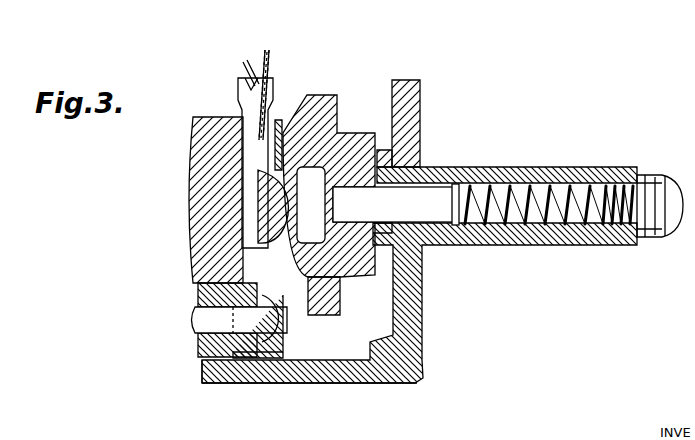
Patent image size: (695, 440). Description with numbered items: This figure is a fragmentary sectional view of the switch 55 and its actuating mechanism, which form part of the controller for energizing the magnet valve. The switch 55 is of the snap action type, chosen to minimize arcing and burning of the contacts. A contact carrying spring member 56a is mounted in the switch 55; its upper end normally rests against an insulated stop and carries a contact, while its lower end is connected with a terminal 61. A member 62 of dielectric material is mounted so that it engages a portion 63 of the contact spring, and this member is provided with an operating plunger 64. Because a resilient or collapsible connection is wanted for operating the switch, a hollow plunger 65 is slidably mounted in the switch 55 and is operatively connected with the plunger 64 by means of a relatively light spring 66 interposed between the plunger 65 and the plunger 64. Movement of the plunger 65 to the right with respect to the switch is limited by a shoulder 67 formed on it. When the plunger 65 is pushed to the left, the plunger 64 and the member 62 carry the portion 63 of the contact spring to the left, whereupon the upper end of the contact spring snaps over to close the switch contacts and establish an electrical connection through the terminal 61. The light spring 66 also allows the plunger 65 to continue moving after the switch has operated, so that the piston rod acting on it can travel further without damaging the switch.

The switch 55 is at (367, 384).
The contact carrying spring member 56a is at (264, 56).
The terminal 61 is at (206, 322).
The member of dielectric material 62 is at (326, 315).
The portion of the contact spring 63 is at (258, 228).
The operating plunger 64 is at (398, 213).
The hollow plunger 65 is at (596, 172).
The spring 66 is at (622, 226).
The shoulder 67 is at (340, 160).